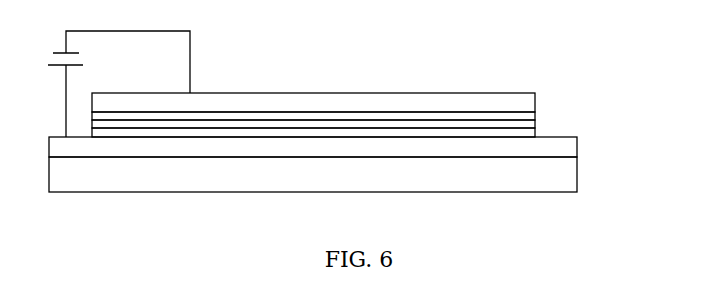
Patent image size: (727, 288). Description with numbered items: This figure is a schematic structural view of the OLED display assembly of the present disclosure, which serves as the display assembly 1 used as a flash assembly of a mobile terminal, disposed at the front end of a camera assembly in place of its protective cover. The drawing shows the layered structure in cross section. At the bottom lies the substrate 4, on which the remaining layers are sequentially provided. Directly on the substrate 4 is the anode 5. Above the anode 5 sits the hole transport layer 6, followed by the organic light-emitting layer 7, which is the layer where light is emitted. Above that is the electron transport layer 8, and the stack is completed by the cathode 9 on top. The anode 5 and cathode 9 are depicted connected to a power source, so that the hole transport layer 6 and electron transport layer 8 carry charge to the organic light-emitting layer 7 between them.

The display assembly 1 is at (362, 112).
The substrate 4 is at (573, 176).
The anode 5 is at (568, 140).
The hole transport layer 6 is at (532, 133).
The organic light-emitting layer 7 is at (536, 125).
The electron transport layer 8 is at (525, 115).
The cathode 9 is at (476, 103).